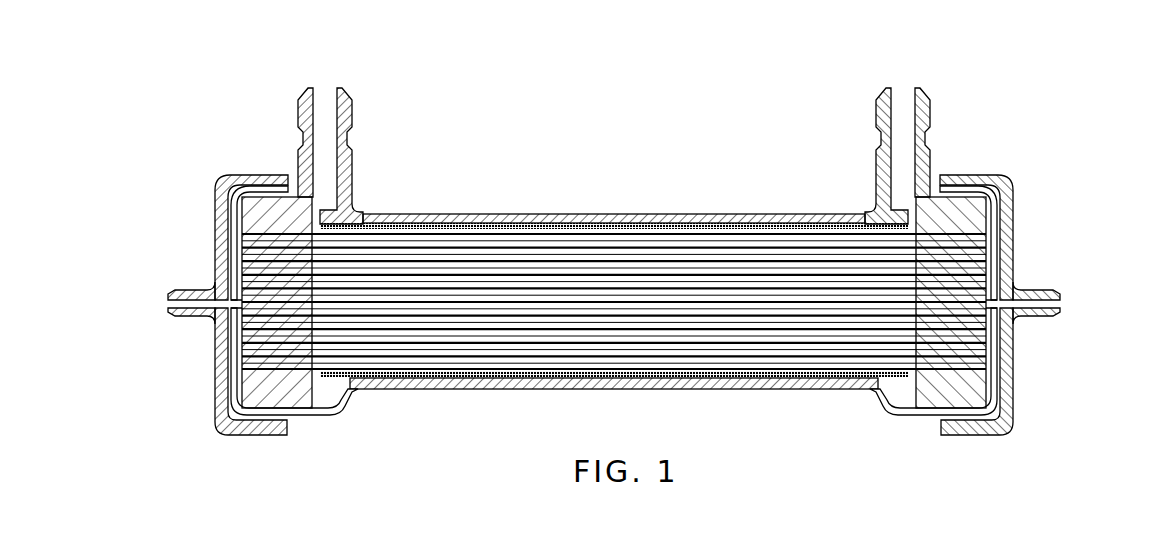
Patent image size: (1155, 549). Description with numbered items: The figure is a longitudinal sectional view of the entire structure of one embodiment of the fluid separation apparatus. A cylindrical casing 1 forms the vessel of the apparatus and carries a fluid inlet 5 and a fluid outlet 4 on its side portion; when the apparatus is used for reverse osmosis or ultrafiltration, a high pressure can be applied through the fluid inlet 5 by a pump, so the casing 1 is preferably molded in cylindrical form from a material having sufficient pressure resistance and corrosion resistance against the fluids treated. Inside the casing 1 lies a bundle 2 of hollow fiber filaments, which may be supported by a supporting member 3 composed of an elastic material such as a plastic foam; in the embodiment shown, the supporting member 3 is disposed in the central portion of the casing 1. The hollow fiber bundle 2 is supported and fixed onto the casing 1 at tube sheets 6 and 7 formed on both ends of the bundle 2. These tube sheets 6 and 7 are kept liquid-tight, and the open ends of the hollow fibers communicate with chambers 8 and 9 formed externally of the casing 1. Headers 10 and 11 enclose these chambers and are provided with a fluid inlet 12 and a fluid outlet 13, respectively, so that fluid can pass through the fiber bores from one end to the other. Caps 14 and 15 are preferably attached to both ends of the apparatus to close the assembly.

The cylindrical casing 1 is at (614, 253).
The bundle of hollow fiber filaments 2 is at (606, 228).
The supporting member 3 is at (692, 226).
The fluid outlet 4 is at (330, 87).
The fluid inlet 5 is at (910, 87).
The tube sheet 6 is at (300, 212).
The tube sheet 7 is at (943, 207).
The chamber 8 is at (1005, 290).
The chamber 9 is at (220, 312).
The header 10 is at (1000, 245).
The header 11 is at (226, 357).
The fluid inlet 12 is at (1062, 300).
The fluid outlet 13 is at (168, 298).
The cap 14 is at (1033, 305).
The cap 15 is at (198, 305).